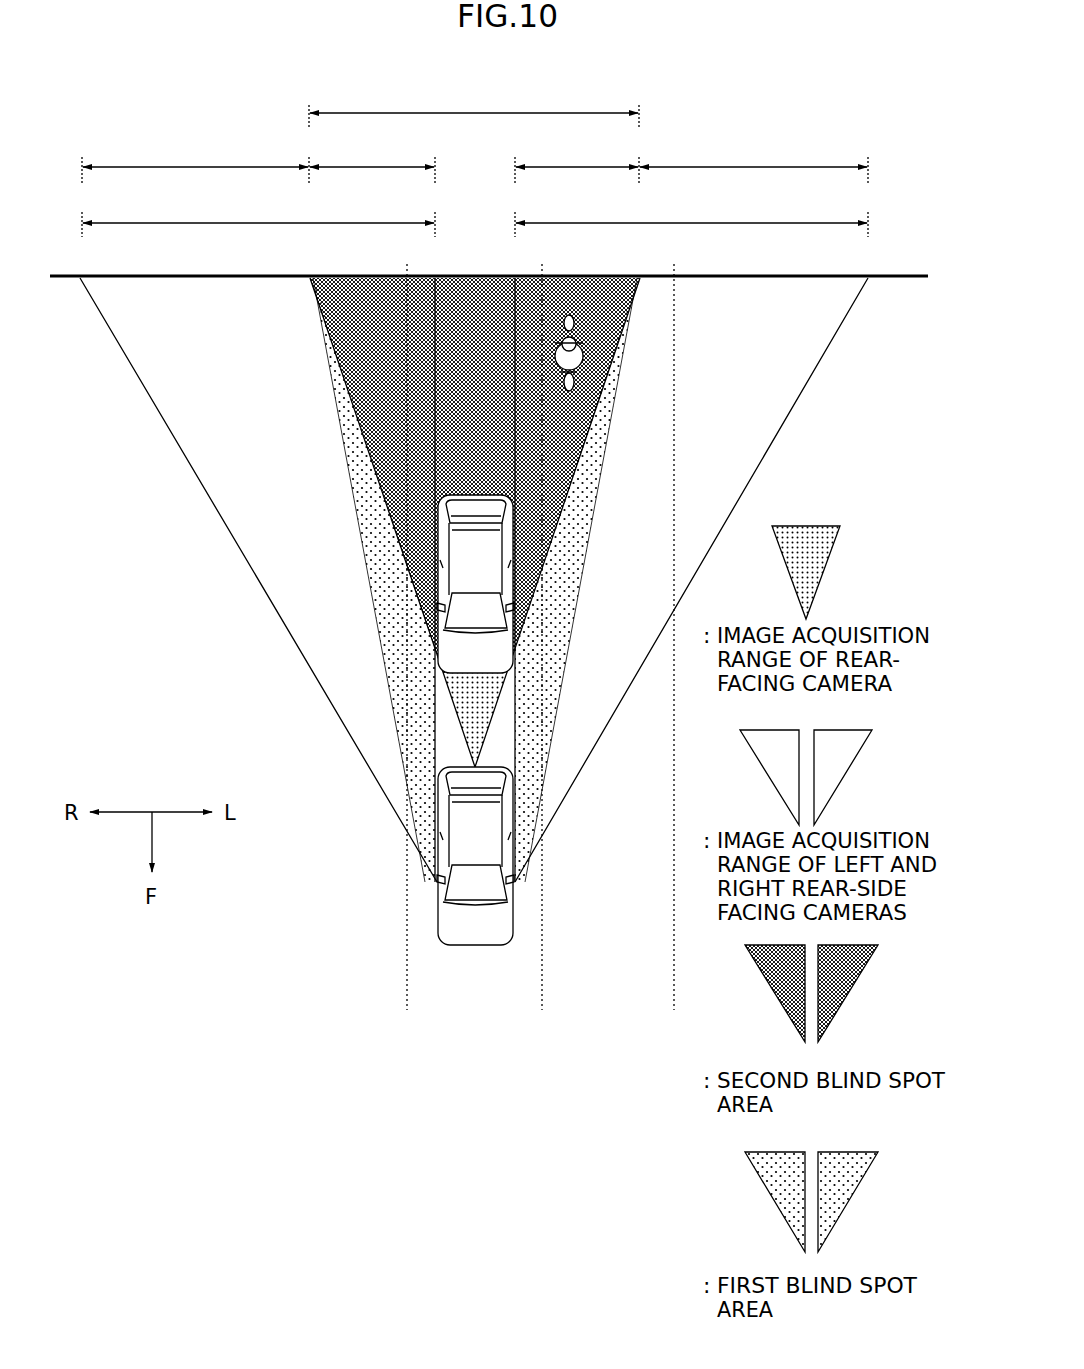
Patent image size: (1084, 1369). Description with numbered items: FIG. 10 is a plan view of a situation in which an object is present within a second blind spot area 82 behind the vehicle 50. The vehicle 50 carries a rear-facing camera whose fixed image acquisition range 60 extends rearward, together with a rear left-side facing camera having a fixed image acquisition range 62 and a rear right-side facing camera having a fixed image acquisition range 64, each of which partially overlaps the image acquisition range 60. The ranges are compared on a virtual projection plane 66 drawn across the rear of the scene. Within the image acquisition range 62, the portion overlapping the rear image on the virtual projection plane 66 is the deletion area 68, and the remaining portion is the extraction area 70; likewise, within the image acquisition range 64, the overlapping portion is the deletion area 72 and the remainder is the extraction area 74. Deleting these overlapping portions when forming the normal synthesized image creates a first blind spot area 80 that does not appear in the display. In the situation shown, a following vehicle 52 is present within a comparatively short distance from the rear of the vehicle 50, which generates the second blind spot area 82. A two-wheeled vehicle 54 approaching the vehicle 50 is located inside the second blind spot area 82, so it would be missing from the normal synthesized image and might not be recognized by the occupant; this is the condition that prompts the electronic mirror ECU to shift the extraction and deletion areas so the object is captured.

The vehicle 50 is at (478, 947).
The following vehicle 52 is at (517, 671).
The two-wheeled vehicle 54 is at (592, 348).
The image acquisition range 60 is at (472, 111).
The image acquisition range 62 is at (691, 221).
The image acquisition range 64 is at (242, 221).
The virtual projection plane 66 is at (884, 278).
The deletion area 68 is at (574, 165).
The extraction area 70 is at (746, 165).
The deletion area 72 is at (371, 165).
The extraction area 74 is at (190, 165).
The first blind spot area 80 is at (400, 678).
The second blind spot area 82 is at (385, 471).